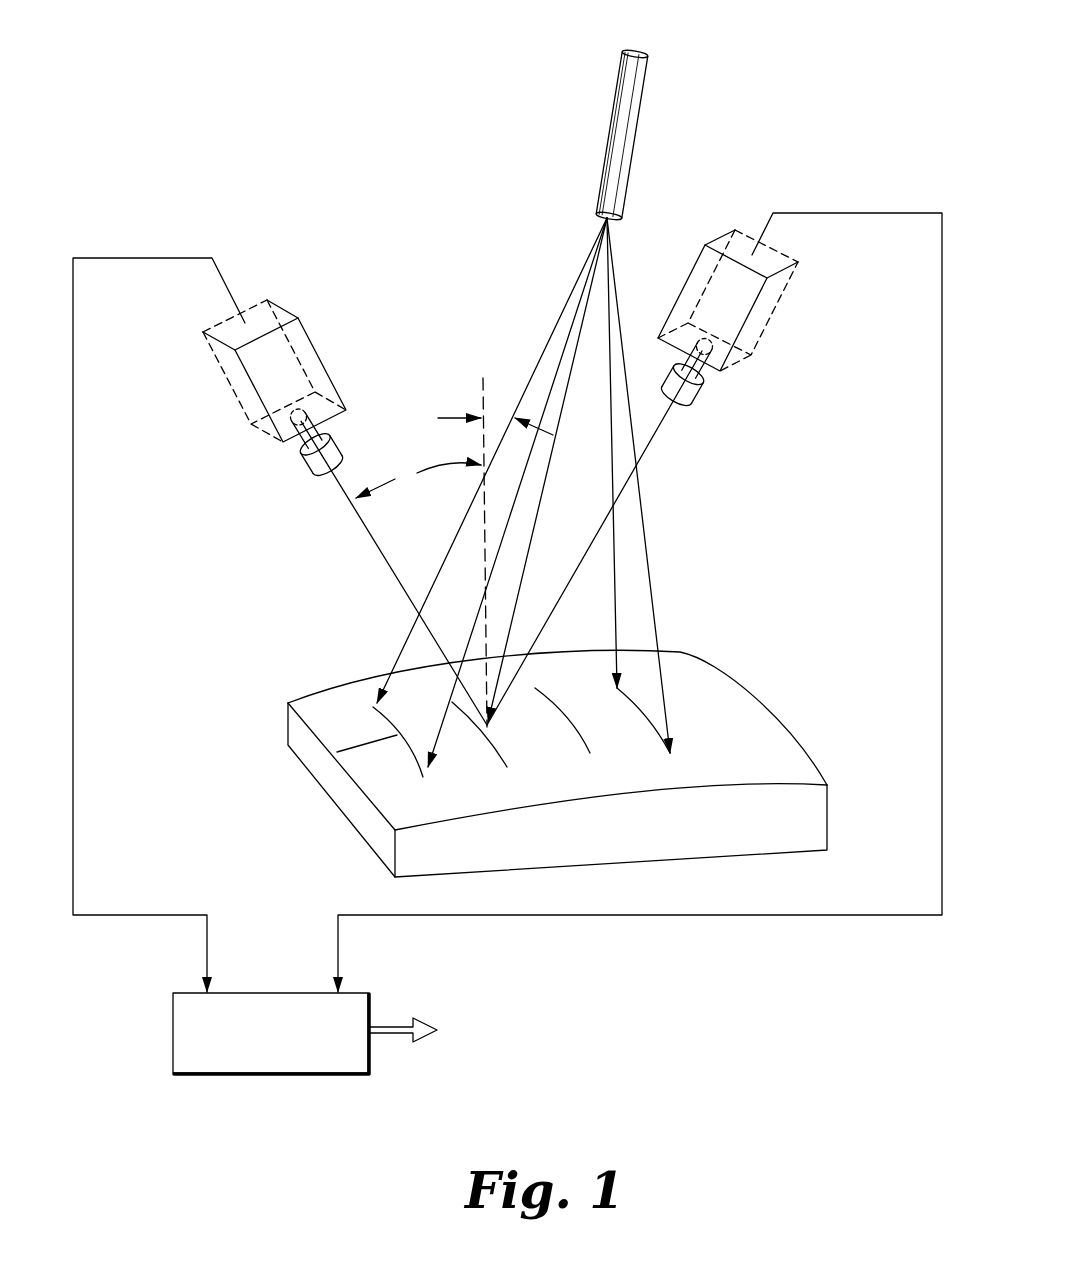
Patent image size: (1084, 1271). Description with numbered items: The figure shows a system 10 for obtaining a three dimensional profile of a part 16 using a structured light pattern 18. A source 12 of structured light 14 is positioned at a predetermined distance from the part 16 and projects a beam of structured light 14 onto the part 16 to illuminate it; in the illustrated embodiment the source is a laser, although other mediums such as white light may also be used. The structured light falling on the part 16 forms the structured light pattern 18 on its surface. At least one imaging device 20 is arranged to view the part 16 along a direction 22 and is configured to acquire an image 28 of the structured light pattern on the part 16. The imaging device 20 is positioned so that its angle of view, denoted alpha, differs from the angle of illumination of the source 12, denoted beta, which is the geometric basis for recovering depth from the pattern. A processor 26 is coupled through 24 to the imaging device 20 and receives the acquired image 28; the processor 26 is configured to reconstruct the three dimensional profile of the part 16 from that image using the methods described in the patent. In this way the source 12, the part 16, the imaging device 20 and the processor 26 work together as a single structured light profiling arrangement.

The system 10 is at (817, 117).
The source 12 is at (631, 121).
The structured light 14 is at (543, 492).
The part 16 is at (735, 688).
The structured light pattern 18 is at (337, 752).
The imaging device 20 is at (300, 333).
The direction 22 is at (390, 573).
The coupling 24 is at (73, 740).
The processor 26 is at (173, 1052).
The image 28 is at (388, 1027).